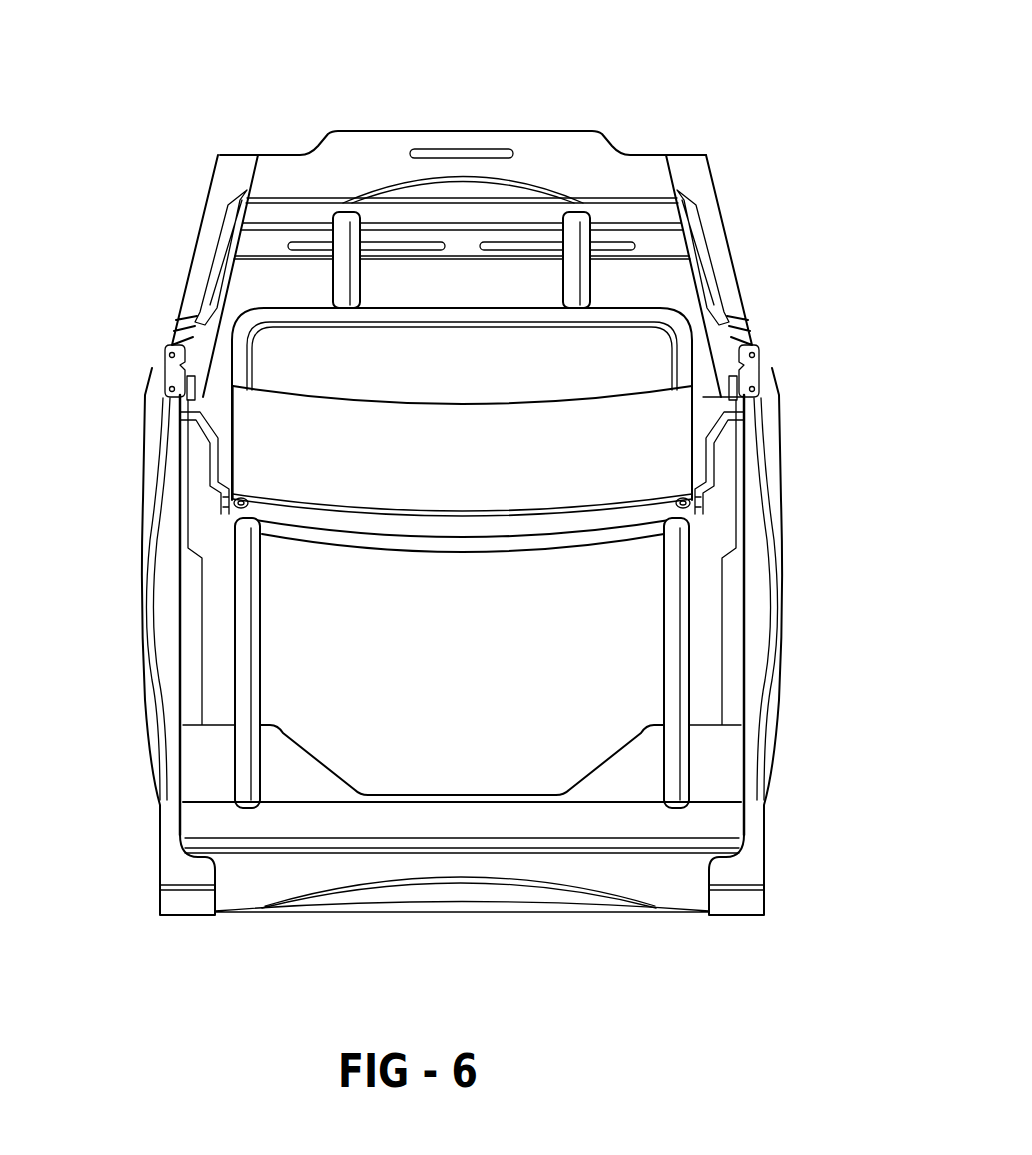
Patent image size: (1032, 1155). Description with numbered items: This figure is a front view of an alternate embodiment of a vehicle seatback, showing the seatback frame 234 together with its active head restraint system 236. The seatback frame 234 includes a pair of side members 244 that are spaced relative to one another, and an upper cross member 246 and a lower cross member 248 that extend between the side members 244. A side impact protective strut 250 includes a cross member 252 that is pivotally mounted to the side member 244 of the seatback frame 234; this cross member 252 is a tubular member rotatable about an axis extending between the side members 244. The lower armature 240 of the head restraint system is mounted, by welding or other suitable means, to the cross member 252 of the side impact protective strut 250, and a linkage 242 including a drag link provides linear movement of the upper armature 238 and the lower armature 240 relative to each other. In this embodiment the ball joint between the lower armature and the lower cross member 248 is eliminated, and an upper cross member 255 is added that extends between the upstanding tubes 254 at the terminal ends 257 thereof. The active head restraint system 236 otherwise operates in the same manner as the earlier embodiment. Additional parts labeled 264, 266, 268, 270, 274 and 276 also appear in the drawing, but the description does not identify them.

The seatback frame 234 is at (750, 163).
The active head restraint system 236 is at (728, 340).
The upper armature 238 is at (243, 326).
The lower armature 240 is at (706, 573).
The linkage 242 is at (212, 536).
The side members 244 is at (200, 238).
The upper cross member 246 is at (495, 152).
The lower cross member 248 is at (728, 757).
The side impact protective strut 250 is at (378, 862).
The cross member 252 is at (582, 838).
The upstanding tubes 254 is at (236, 689).
The upper cross member 255 is at (470, 541).
The terminal ends 257 is at (684, 528).
The frame outer tube 264 is at (452, 317).
The frame inner edge 266 is at (250, 381).
The seat back panel 268 is at (445, 415).
The headrest posts 270 is at (366, 222).
The Z bracket 274 is at (218, 457).
The hinge bracket 276 is at (173, 370).